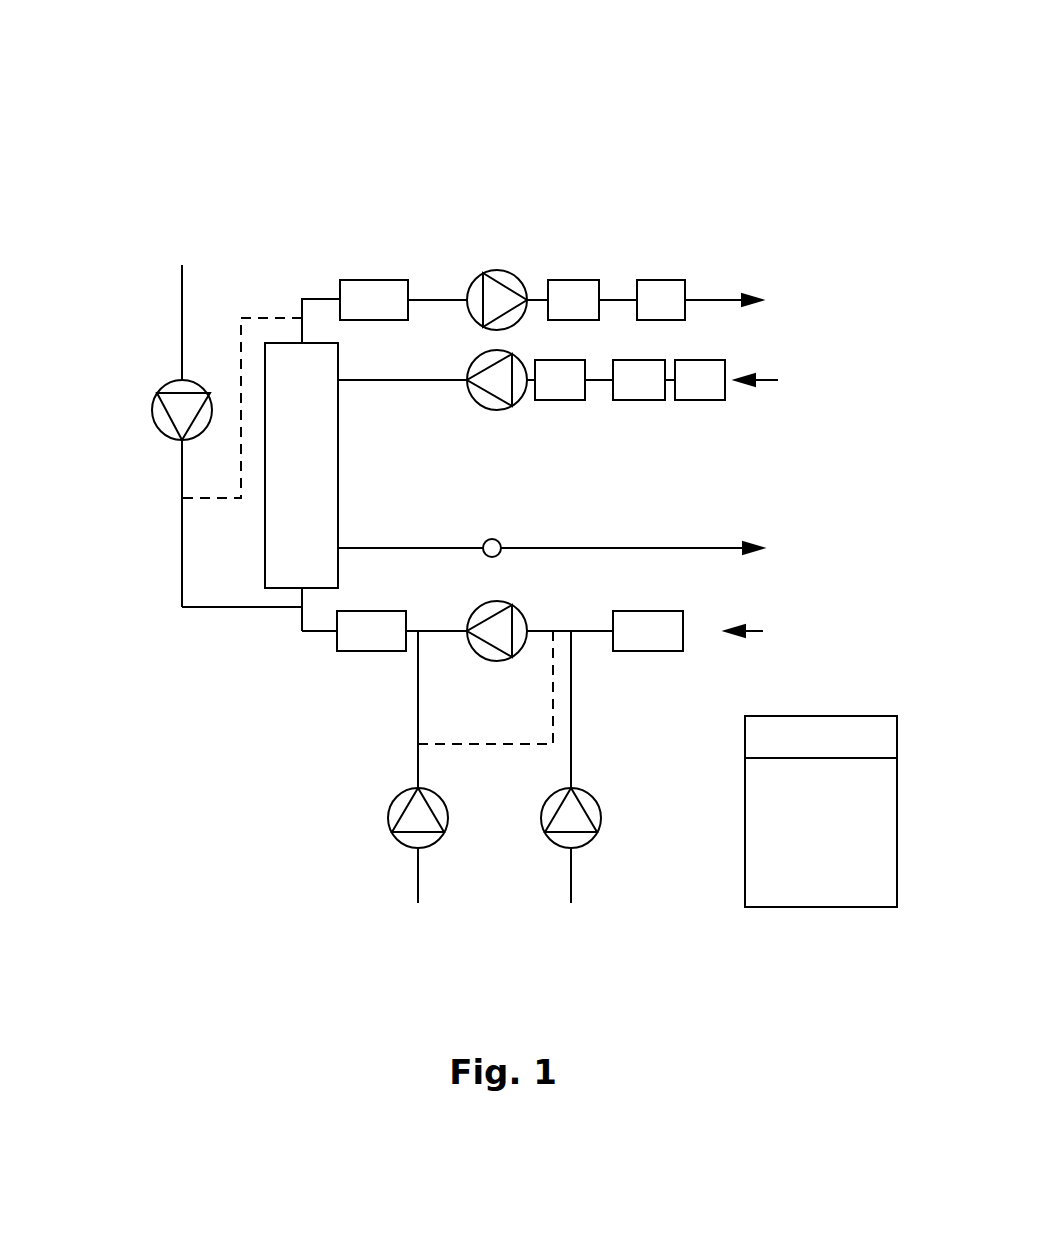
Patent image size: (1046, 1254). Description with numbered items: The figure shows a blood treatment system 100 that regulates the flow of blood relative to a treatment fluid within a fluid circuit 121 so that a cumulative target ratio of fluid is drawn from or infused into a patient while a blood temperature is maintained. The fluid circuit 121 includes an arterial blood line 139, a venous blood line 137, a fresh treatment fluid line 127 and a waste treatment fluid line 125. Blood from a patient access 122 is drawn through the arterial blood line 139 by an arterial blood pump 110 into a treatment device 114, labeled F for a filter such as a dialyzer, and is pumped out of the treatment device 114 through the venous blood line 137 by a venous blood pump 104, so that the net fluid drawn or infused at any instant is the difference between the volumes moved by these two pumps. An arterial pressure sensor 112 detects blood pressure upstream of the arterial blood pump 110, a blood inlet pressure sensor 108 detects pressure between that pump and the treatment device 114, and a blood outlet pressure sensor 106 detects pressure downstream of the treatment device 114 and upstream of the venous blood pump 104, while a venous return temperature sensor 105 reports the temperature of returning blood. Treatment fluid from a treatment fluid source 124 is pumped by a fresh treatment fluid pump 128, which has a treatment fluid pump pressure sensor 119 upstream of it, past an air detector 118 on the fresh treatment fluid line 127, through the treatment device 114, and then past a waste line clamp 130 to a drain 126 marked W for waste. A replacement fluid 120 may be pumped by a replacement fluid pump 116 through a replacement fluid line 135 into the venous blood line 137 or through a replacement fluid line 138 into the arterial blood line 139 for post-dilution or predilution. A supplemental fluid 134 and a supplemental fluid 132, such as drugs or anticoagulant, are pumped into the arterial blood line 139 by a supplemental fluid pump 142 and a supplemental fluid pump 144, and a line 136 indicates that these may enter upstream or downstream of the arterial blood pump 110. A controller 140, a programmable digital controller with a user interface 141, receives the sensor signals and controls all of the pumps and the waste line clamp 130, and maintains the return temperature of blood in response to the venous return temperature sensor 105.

The blood treatment system 100 is at (540, 320).
The venous blood pump 104 is at (529, 262).
The venous return temperature sensor 105 is at (605, 257).
The blood outlet pressure sensor 106 is at (384, 259).
The blood inlet pressure sensor 108 is at (348, 671).
The arterial blood pump 110 is at (439, 667).
The arterial pressure sensor 112 is at (678, 671).
The treatment device 114 is at (282, 492).
The replacement fluid pump 116 is at (149, 447).
The air detector 118 is at (623, 413).
The treatment fluid pump pressure sensor 119 is at (558, 413).
The replacement fluid 120 is at (235, 254).
The fluid circuit 121 is at (729, 248).
The patient access 122 is at (851, 431).
The treatment fluid source 124 is at (796, 370).
The waste treatment fluid line 125 is at (410, 513).
The drain 126 is at (700, 505).
The fresh treatment fluid line 127 is at (402, 421).
The fresh treatment fluid pump 128 is at (464, 416).
The waste line clamp 130 is at (529, 519).
The supplemental fluid 132 is at (613, 912).
The supplemental fluid 134 is at (378, 913).
The replacement fluid line 135 is at (244, 363).
The line 136 is at (485, 734).
The venous blood line 137 is at (337, 275).
The replacement fluid line 138 is at (194, 540).
The arterial blood line 139 is at (271, 642).
The controller 140 is at (798, 862).
The user interface 141 is at (818, 752).
The supplemental fluid pump 142 is at (354, 767).
The supplemental fluid pump 144 is at (565, 772).